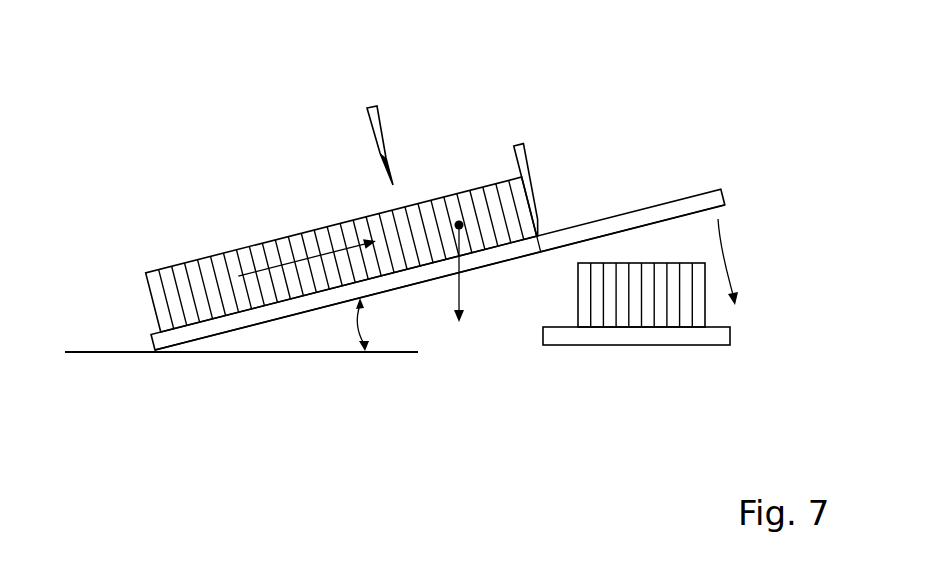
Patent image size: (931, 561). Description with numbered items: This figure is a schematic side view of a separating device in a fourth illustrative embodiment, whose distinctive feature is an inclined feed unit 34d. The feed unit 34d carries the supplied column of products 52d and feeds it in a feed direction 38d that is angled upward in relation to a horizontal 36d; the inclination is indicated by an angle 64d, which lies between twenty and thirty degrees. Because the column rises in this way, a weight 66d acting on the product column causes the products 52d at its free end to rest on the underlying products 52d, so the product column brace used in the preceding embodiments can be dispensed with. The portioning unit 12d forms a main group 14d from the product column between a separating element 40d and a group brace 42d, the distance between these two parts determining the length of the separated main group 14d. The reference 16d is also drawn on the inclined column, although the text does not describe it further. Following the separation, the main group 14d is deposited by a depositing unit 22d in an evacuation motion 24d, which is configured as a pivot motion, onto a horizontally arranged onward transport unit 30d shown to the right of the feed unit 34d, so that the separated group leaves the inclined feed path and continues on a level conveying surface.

The portioning unit 12d is at (408, 121).
The main group 14d is at (649, 243).
The bristle field 16d is at (267, 242).
The depositing unit 22d is at (711, 200).
The evacuation motion 24d is at (729, 252).
The onward transport unit 30d is at (587, 335).
The feed unit 34d is at (215, 330).
The horizontal 36d is at (127, 353).
The feed direction 38d is at (307, 247).
The separating element 40d is at (390, 157).
The group brace 42d is at (523, 168).
The product 52d is at (460, 218).
The angle 64d is at (362, 322).
The weight 66d is at (460, 288).